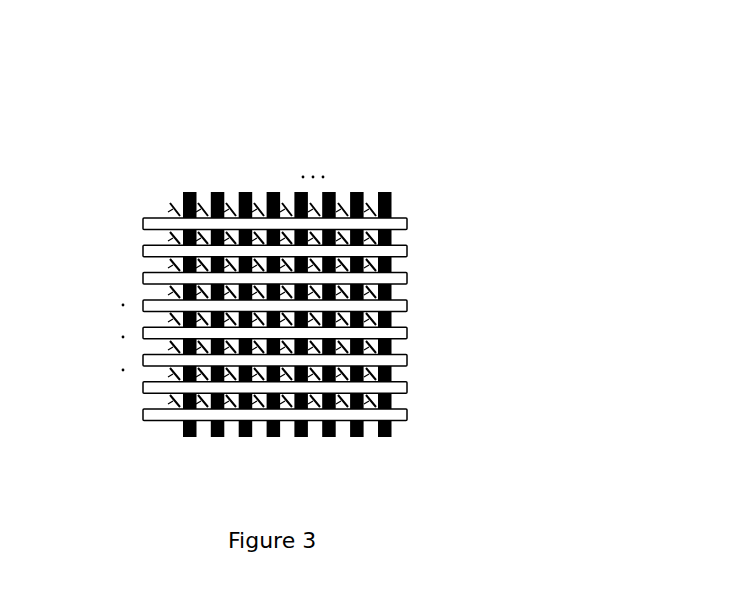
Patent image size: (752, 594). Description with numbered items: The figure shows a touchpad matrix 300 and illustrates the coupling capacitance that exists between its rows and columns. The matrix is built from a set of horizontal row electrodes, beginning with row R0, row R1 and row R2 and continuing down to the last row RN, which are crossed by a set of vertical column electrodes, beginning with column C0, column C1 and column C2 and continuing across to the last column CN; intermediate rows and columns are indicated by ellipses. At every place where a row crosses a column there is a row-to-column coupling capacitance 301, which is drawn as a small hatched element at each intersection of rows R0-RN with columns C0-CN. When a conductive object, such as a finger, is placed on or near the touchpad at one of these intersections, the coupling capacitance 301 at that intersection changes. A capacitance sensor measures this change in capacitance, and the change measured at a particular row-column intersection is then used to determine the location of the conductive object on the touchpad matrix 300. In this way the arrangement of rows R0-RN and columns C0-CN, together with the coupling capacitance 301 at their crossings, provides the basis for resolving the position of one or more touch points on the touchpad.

The touchpad matrix 300 is at (225, 241).
The coupling capacitance 301 is at (167, 217).
The row R0 is at (255, 224).
The row R1 is at (255, 252).
The row R2 is at (255, 279).
The row RN is at (252, 415).
The column C0 is at (187, 301).
The column C1 is at (218, 186).
The column C2 is at (243, 301).
The column CN is at (378, 301).